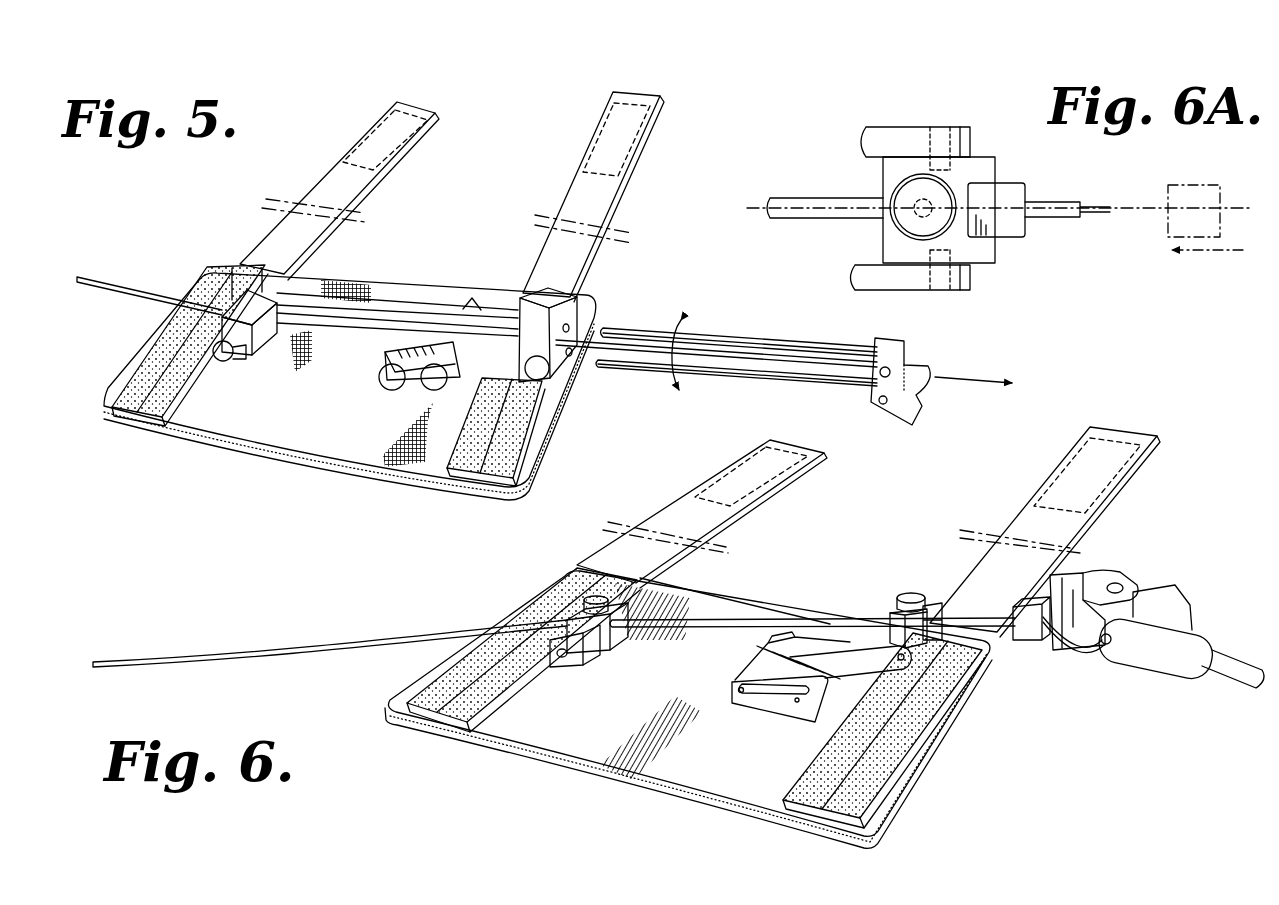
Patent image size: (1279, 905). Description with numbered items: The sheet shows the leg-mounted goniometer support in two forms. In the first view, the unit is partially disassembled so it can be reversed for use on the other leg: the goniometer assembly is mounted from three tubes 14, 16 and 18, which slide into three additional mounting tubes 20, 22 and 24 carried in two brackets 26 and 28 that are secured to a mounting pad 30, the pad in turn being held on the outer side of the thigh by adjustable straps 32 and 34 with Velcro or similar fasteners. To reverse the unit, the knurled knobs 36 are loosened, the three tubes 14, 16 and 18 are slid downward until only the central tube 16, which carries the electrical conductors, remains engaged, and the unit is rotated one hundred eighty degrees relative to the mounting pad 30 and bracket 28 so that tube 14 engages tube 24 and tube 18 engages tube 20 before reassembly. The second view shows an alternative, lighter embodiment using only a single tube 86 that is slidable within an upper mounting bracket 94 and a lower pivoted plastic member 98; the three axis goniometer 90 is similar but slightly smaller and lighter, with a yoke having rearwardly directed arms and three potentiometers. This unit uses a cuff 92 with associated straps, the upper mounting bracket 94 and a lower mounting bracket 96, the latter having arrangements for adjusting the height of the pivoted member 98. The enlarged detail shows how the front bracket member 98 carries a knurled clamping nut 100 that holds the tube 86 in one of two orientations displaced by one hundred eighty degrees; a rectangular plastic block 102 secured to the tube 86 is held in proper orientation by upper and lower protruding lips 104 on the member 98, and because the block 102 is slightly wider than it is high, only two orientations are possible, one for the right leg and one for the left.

In FIG. 5, the tube 14 is at (742, 376).
In FIG. 5, the central tube 16 is at (798, 358).
In FIG. 5, the tube 18 is at (713, 338).
In FIG. 5, the mounting tube 20 is at (345, 333).
In FIG. 5, the mounting tube 22 is at (382, 322).
In FIG. 5, the mounting tube 24 is at (302, 300).
In FIG. 5, the bracket 26 is at (252, 290).
In FIG. 5, the bracket 28 is at (530, 286).
In FIG. 5, the mounting pad 30 is at (323, 433).
In FIG. 5, the adjustable strap 32 is at (323, 187).
In FIG. 5, the adjustable strap 34 is at (598, 208).
In FIG. 5, the knurled knob 36 is at (570, 307).
In FIG. 6A, the tube 86 is at (1063, 202).
In FIG. 6, the tube 86 is at (698, 618).
In FIG. 6, the three axis goniometer 90 is at (1180, 592).
In FIG. 6, the cuff 92 is at (673, 692).
In FIG. 6, the upper mounting bracket 94 is at (555, 670).
In FIG. 6, the lower mounting bracket 96 is at (752, 710).
In FIG. 6A, the lower pivoted plastic member 98 is at (886, 183).
In FIG. 6, the lower pivoted plastic member 98 is at (893, 625).
In FIG. 6A, the knurled clamping nut 100 is at (920, 173).
In FIG. 6, the knurled clamping nut 100 is at (909, 594).
In FIG. 6A, the rectangular plastic block 102 is at (1010, 225).
In FIG. 6, the rectangular plastic block 102 is at (942, 618).
In FIG. 6A, the protruding lip 104 is at (990, 172).